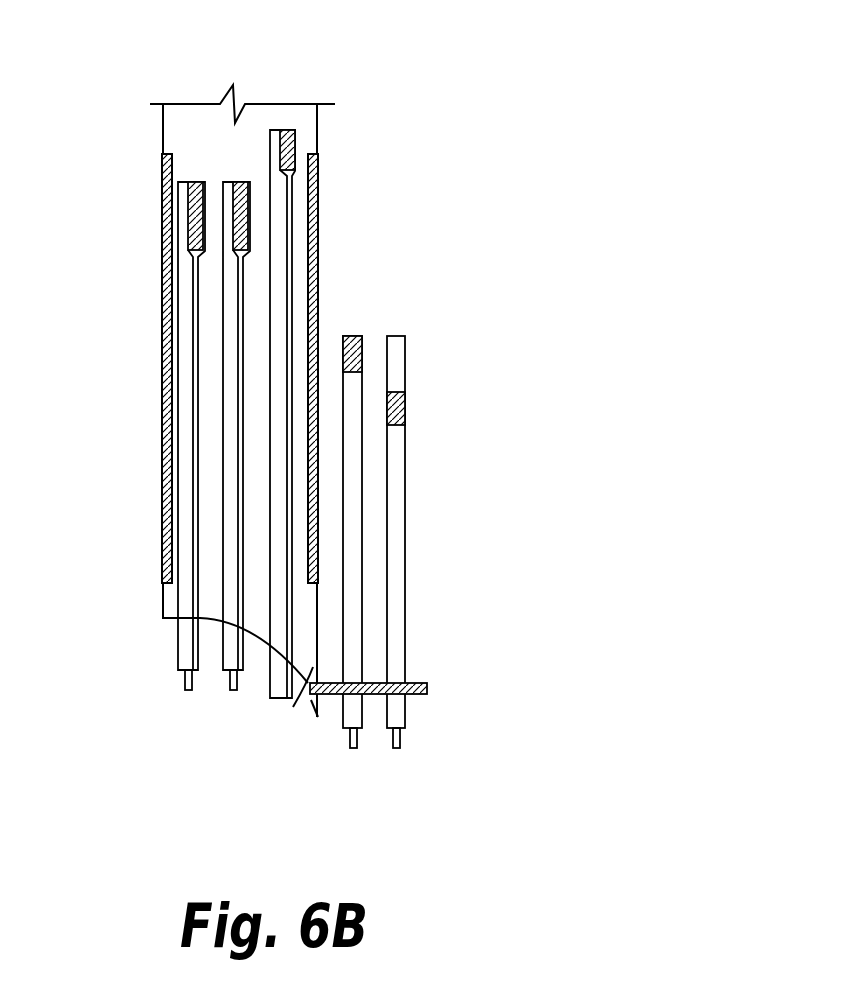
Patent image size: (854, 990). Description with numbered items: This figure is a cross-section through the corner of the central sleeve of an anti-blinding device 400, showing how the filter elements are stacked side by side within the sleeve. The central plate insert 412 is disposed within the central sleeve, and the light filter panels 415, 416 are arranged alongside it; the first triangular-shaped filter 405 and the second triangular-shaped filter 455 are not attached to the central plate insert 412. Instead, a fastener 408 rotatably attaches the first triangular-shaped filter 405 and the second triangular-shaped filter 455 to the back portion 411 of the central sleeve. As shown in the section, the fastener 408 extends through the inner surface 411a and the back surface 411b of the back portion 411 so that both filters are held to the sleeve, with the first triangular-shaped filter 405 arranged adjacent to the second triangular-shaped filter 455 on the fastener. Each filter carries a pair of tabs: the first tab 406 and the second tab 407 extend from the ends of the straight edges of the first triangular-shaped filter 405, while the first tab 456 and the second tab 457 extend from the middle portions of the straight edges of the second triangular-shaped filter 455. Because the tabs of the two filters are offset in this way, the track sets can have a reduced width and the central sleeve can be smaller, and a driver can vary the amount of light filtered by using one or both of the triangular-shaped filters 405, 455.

The anti-blinding device 400 is at (116, 110).
The back portion 411 is at (323, 221).
The inner surface 411a is at (290, 705).
The back surface 411b is at (317, 633).
The central plate insert 412 is at (275, 258).
The light filter panel 415 is at (187, 290).
The light filter panel 416 is at (233, 340).
The first triangular-shaped filter 405 is at (358, 477).
The first tab 406 is at (353, 750).
The second tab 407 is at (352, 335).
The fastener 408 is at (427, 690).
The second triangular-shaped filter 455 is at (400, 552).
The first tab 456 is at (400, 748).
The second tab 457 is at (406, 412).